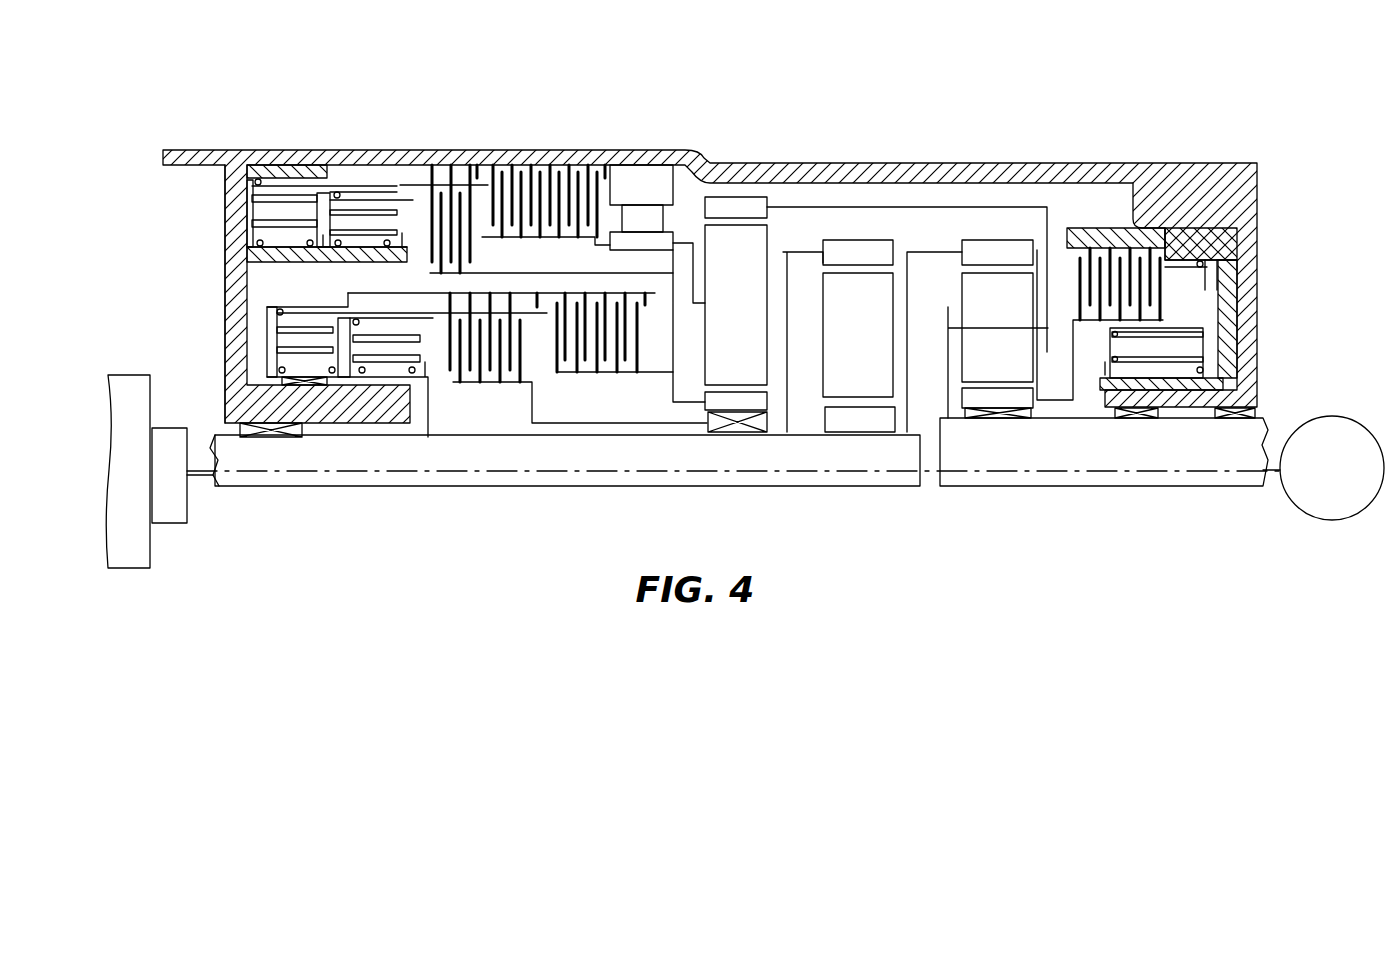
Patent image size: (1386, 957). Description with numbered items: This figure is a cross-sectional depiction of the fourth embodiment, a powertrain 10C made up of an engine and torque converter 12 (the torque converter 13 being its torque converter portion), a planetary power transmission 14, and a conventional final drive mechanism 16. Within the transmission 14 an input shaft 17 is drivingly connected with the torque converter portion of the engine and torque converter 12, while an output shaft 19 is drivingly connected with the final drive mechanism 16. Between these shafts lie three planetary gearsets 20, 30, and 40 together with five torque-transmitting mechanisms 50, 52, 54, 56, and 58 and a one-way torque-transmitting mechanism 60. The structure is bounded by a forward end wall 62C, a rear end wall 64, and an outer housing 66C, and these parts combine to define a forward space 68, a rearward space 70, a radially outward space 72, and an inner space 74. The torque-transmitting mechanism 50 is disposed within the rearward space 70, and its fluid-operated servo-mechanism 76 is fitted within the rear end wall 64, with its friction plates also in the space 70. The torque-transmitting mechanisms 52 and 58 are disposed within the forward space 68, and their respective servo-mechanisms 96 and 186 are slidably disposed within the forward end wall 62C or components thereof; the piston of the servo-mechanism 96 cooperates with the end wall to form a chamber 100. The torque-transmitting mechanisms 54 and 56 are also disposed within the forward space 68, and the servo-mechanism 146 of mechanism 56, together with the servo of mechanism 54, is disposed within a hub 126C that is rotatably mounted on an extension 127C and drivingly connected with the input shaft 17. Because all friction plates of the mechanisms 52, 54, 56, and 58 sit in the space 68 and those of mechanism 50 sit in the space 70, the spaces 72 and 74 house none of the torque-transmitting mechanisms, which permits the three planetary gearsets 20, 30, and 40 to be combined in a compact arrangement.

The powertrain 10C is at (160, 135).
The engine and torque converter 12 is at (135, 375).
The torque converter 13 is at (187, 428).
The planetary power transmission 14 is at (742, 90).
The final drive mechanism 16 is at (1362, 420).
The input shaft 17 is at (232, 463).
The output shaft 19 is at (1170, 455).
The planetary gearset 20 is at (725, 445).
The planetary gearset 30 is at (867, 433).
The planetary gearset 40 is at (1002, 428).
The torque-transmitting mechanism 50 is at (1160, 205).
The torque-transmitting mechanism 52 is at (367, 253).
The torque-transmitting mechanism 54 is at (585, 373).
The torque-transmitting mechanism 56 is at (515, 384).
The torque-transmitting mechanism 58 is at (540, 160).
The one-way torque-transmitting mechanism 60 is at (667, 177).
The end wall 62C is at (225, 290).
The end wall 64 is at (1255, 285).
The outer housing 66C is at (845, 183).
The forward space 68 is at (412, 218).
The rearward space 70 is at (1105, 210).
The radially outward space 72 is at (863, 203).
The inner space 74 is at (803, 397).
The fluid-operated servo-mechanism 76 is at (1213, 265).
The servo-mechanism 96 is at (355, 188).
The chamber 100 is at (265, 333).
The hub 126C is at (437, 405).
The extension 127C is at (380, 405).
The servo-mechanism 146 is at (370, 380).
The servo-mechanism 186 is at (262, 172).